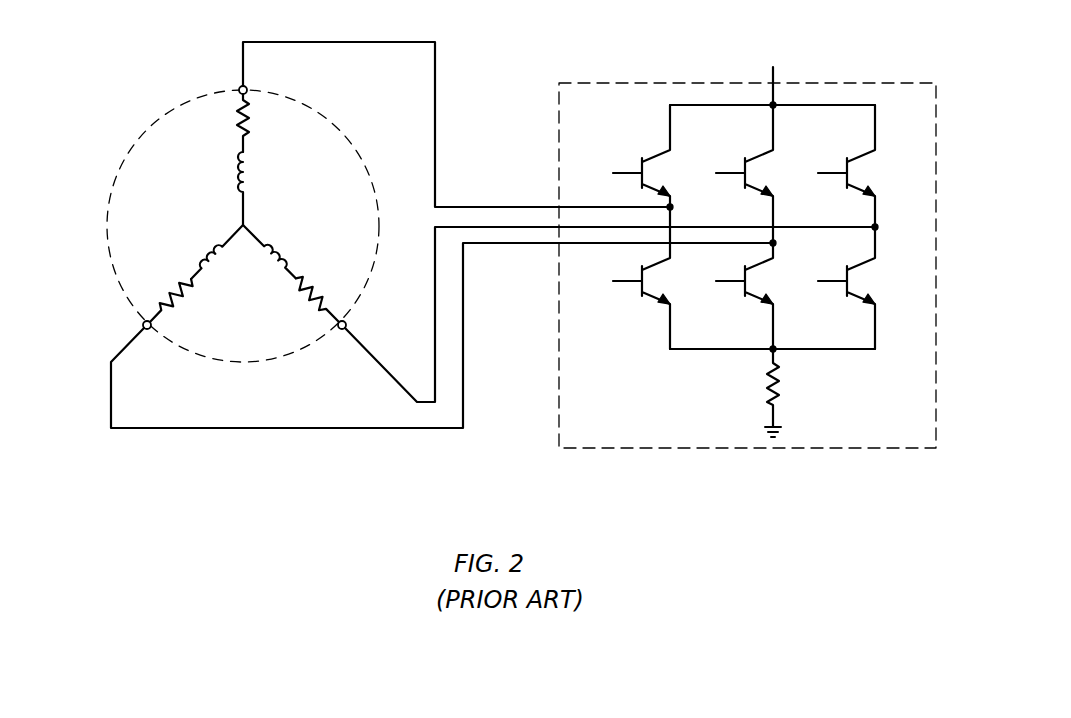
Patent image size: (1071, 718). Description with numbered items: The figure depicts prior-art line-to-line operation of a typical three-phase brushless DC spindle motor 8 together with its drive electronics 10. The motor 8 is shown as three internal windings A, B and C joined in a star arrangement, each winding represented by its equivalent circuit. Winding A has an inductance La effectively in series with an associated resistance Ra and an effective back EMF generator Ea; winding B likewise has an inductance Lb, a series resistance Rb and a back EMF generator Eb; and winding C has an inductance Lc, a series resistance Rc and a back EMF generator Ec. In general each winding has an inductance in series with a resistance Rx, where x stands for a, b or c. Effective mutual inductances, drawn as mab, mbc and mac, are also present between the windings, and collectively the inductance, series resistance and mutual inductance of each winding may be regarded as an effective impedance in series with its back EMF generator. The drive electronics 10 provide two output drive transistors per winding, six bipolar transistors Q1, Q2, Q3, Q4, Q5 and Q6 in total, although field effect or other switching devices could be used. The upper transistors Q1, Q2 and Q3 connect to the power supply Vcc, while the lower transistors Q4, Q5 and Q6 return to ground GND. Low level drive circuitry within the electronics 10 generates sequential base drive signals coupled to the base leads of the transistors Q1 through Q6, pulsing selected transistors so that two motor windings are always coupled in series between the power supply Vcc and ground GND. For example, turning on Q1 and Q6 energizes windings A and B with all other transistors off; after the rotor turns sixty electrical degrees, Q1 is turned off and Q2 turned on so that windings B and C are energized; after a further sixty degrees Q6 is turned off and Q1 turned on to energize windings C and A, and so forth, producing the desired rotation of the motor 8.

The three-phase brushless DC spindle motor 8 is at (125, 66).
The drive electronics 10 is at (598, 63).
The back EMF generator of winding A Ea is at (243, 88).
The back EMF generator of winding B Eb is at (342, 330).
The back EMF generator of winding C Ec is at (143, 327).
The series resistance of winding A Ra is at (240, 114).
The series resistance of winding B Rb is at (322, 316).
The series resistance of winding C Rc is at (163, 316).
The inductance of winding A La is at (238, 190).
The inductance of winding B Lb is at (286, 262).
The inductance of winding C Lc is at (215, 270).
The motor winding A is at (250, 149).
The motor winding B is at (312, 296).
The motor winding C is at (183, 289).
The mutual inductance between windings A and B mab is at (362, 150).
The mutual inductance between windings A and C mac is at (123, 168).
The mutual inductance between windings B and C mbc is at (246, 368).
The drive transistor Q1 is at (637, 156).
The drive transistor Q2 is at (740, 174).
The drive transistor Q3 is at (841, 166).
The drive transistor Q4 is at (637, 278).
The drive transistor Q5 is at (740, 296).
The drive transistor Q6 is at (841, 288).
The power supply Vcc is at (772, 74).
The ground GND is at (749, 424).
The winding resistance Rx is at (795, 388).